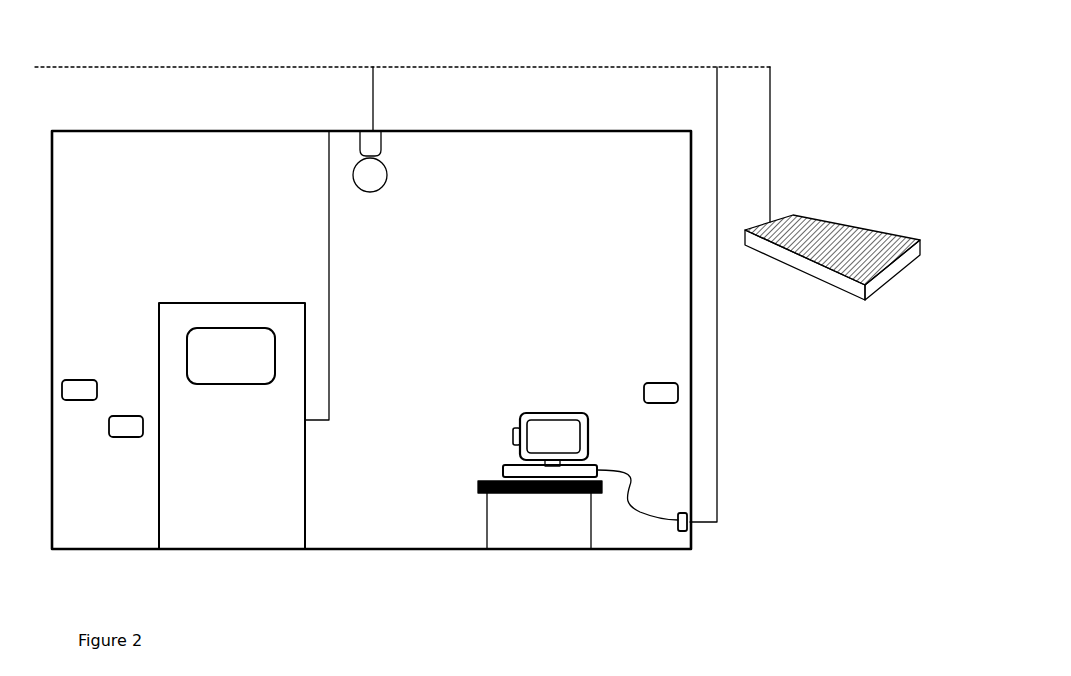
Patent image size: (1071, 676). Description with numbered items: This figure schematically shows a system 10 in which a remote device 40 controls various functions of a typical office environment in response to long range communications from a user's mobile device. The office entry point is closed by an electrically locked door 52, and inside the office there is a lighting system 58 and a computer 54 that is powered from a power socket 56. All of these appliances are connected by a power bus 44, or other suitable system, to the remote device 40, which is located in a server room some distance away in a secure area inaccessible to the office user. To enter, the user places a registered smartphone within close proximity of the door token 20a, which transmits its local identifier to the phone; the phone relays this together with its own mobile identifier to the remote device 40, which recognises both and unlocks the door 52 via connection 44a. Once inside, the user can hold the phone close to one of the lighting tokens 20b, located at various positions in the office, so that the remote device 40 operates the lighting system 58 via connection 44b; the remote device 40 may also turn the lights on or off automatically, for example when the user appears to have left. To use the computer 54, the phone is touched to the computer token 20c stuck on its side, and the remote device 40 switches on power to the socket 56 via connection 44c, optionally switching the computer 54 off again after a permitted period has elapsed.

The system 10 is at (113, 103).
The door token 20a is at (118, 437).
The lighting token 20b is at (78, 380).
The computer token 20c is at (512, 434).
The remote device 40 is at (803, 268).
The power bus 44 is at (698, 66).
The connection 44a is at (332, 272).
The connection 44b is at (375, 94).
The connection 44c is at (719, 480).
The electrically locked door 52 is at (210, 303).
The computer 54 is at (570, 413).
The power socket 56 is at (676, 524).
The lighting system 58 is at (387, 178).